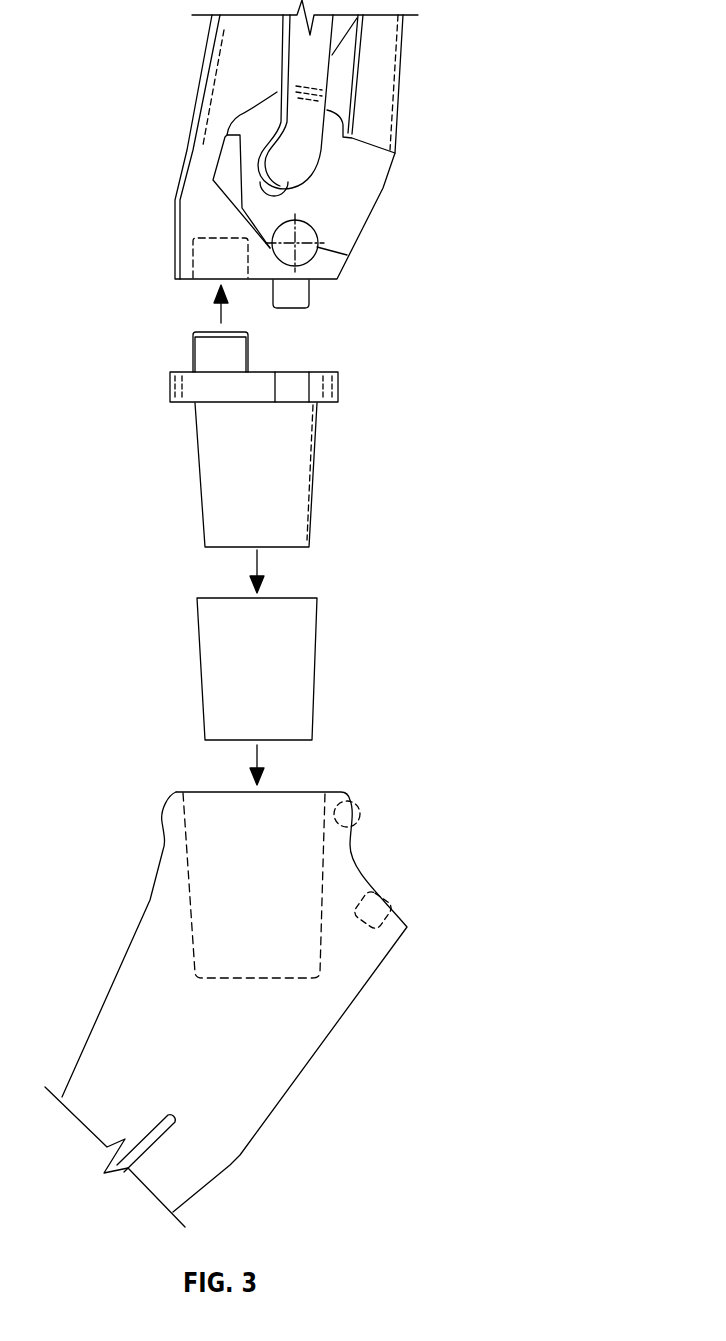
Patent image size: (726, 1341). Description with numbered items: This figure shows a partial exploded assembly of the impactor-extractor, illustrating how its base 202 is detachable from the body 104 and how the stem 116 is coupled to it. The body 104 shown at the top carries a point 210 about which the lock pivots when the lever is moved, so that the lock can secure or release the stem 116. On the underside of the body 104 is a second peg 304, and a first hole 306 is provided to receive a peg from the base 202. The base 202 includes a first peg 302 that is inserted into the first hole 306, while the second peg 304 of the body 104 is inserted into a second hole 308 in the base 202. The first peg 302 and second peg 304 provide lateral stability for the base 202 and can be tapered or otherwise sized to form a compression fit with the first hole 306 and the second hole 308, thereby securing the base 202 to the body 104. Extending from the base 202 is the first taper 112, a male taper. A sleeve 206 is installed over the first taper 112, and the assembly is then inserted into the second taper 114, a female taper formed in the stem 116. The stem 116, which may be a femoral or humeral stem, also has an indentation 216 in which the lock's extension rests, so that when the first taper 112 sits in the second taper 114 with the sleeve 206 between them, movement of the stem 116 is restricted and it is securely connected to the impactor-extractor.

The body 104 is at (400, 100).
The point 210 is at (297, 242).
The first hole 306 is at (193, 257).
The second peg 304 is at (309, 293).
The first peg 302 is at (193, 353).
The base 202 is at (338, 385).
The second hole 308 is at (292, 402).
The first taper 112 is at (318, 447).
The sleeve 206 is at (316, 670).
The stem 116 is at (368, 982).
The second taper 114 is at (190, 903).
The indentation 216 is at (383, 902).